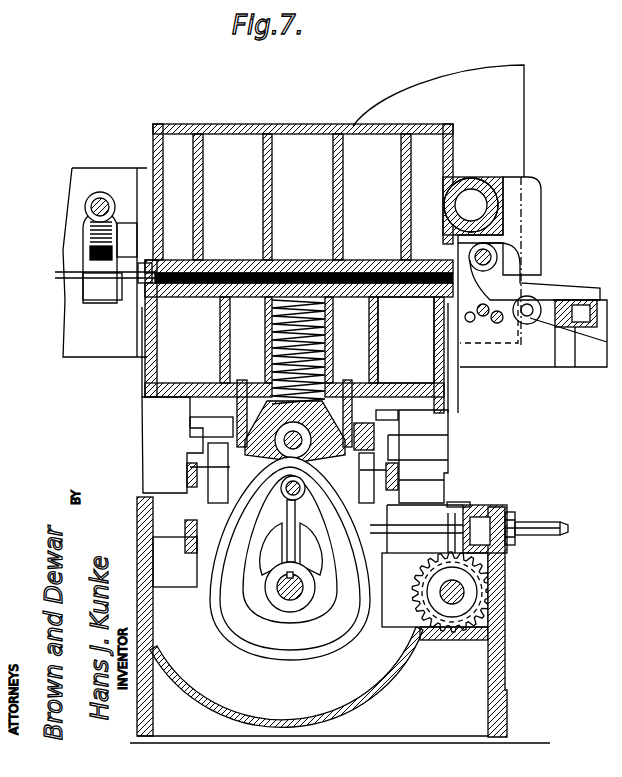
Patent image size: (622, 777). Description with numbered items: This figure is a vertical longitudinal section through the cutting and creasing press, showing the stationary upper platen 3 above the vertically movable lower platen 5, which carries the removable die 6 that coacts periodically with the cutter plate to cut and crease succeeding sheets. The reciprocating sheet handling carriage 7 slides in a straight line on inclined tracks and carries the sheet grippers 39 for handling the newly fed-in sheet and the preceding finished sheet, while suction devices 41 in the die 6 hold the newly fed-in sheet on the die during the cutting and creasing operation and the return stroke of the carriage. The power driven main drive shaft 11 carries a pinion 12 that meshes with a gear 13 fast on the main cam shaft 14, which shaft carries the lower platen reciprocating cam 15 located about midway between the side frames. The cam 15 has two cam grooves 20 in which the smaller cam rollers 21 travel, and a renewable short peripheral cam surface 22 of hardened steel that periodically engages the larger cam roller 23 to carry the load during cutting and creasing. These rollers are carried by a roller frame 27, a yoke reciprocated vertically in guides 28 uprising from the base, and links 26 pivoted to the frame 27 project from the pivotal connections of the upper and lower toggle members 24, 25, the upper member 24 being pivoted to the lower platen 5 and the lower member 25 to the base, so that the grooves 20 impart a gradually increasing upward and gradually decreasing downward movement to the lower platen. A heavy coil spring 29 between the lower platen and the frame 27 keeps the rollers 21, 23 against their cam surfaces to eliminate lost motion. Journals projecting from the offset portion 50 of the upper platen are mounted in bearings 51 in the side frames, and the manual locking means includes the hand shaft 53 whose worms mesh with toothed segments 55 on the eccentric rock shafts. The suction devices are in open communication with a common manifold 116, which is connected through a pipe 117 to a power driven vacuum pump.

The stationary upper platen 3 is at (334, 239).
The vertically movable lower platen 5 is at (436, 328).
The removable die 6 is at (273, 267).
The reciprocating sheet handling carriage 7 is at (55, 275).
The main drive shaft 11 is at (465, 594).
The pinion 12 is at (478, 577).
The gear 13 is at (437, 596).
The main cam shaft 14 is at (280, 590).
The lower platen reciprocating cam 15 is at (272, 657).
The cam groove 20 is at (268, 540).
The smaller cam roller 21 is at (304, 493).
The renewable peripheral cam surface 22 is at (278, 462).
The larger cam roller 23 is at (295, 433).
The upper toggle lever member 24 is at (205, 438).
The lower toggle lever member 25 is at (213, 507).
The link 26 is at (188, 472).
The roller frame 27 is at (341, 390).
The guide 28 is at (195, 423).
The heavy coil spring 29 is at (272, 360).
The sheet gripper 39 is at (115, 277).
The suction device 41 is at (385, 266).
The offset portion 50 is at (473, 206).
The bearing 51 is at (505, 182).
The hand shaft 53 is at (100, 198).
The toothed segment 55 is at (92, 235).
The common manifold 116 is at (487, 520).
The pipe 117 is at (540, 525).